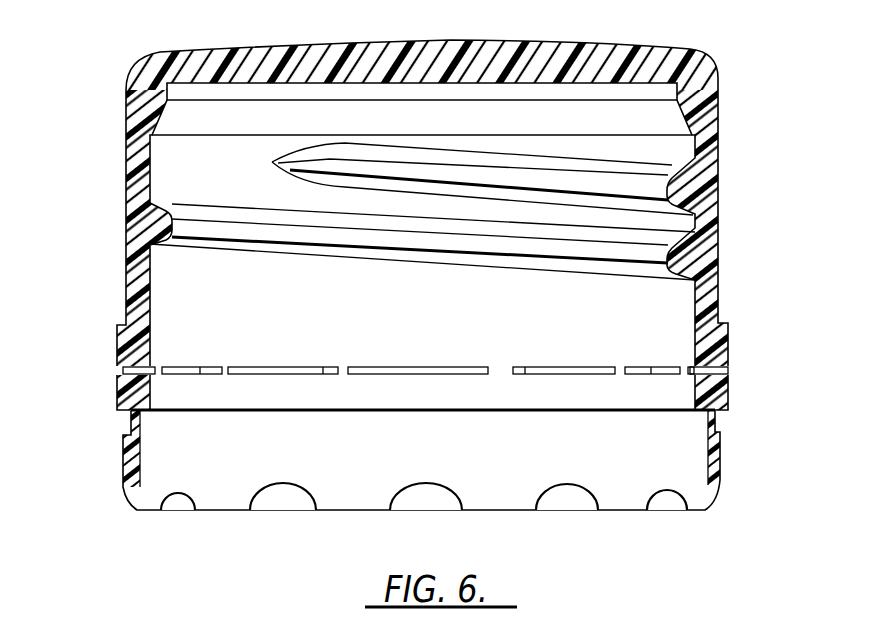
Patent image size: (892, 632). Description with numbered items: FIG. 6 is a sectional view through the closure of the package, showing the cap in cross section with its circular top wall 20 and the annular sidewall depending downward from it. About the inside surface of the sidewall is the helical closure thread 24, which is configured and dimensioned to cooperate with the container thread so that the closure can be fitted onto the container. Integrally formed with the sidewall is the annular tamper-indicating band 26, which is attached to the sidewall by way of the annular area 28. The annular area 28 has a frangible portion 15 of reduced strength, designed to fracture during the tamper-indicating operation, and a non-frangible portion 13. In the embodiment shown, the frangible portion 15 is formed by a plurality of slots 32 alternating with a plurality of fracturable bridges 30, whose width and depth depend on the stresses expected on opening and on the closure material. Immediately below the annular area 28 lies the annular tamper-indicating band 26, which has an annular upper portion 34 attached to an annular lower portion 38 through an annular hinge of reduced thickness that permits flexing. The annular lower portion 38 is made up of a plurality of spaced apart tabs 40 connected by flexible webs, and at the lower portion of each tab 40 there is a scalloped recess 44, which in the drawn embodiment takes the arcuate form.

The top wall 20 is at (440, 50).
The closure thread 24 is at (678, 188).
The annular tamper-indicating band 26 is at (733, 418).
The annular area 28 is at (733, 362).
The fracturable bridges 30 is at (225, 367).
The slots 32 is at (125, 373).
The non-frangible portion 13 is at (498, 370).
The frangible portion 15 is at (305, 368).
The annular upper portion 34 is at (720, 398).
The annular lower portion 38 is at (730, 455).
The tabs 40 is at (130, 468).
The scalloped recess 44 is at (281, 488).